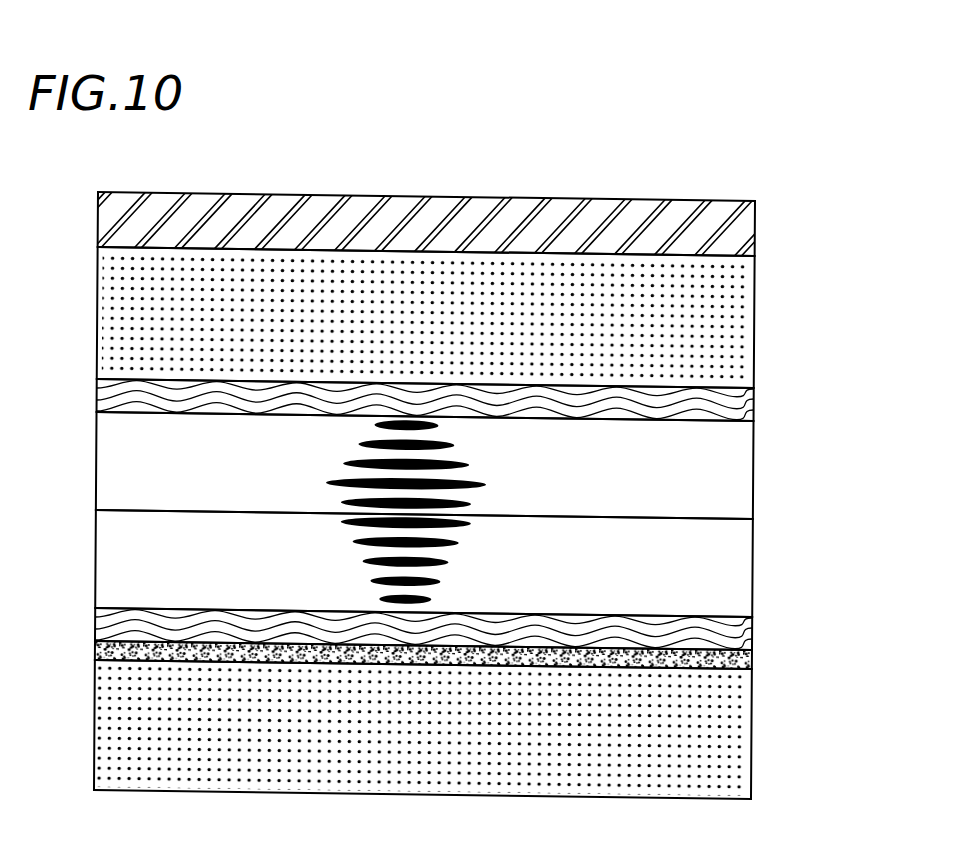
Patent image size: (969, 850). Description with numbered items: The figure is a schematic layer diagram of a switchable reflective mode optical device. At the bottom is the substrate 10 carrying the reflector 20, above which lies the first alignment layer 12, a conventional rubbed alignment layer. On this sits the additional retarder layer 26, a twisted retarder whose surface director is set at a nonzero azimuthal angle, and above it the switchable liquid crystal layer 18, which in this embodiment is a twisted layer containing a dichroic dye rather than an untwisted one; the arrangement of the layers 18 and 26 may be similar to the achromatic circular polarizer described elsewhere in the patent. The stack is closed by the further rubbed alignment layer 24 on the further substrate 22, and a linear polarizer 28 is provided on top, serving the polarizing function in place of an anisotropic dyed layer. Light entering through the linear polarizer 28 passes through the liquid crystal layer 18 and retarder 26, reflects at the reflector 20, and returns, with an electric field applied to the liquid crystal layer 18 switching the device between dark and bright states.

The substrate 10 is at (723, 733).
The first alignment layer 12 is at (733, 633).
The switchable liquid crystal layer 18 is at (735, 481).
The reflector 20 is at (755, 652).
The further substrate 22 is at (732, 318).
The further rubbed alignment layer 24 is at (747, 408).
The additional retarder layer 26 is at (722, 567).
The linear polarizer 28 is at (747, 231).